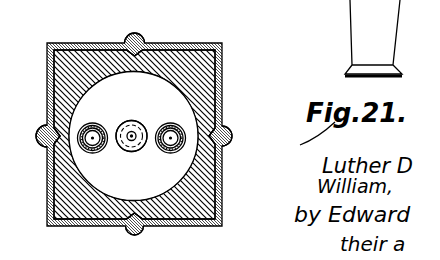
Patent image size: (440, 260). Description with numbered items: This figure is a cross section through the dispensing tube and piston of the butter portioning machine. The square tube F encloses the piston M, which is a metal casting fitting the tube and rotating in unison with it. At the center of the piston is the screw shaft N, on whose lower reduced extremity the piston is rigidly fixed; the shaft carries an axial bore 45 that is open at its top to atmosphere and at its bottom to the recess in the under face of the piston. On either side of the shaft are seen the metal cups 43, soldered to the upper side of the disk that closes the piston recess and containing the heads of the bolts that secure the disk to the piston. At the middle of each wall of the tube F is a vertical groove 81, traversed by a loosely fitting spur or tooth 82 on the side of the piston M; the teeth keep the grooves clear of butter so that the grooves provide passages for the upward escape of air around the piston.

The vertical grooves 81 is at (131, 36).
The spurs or teeth 82 is at (144, 41).
The metal cups 43 is at (103, 152).
The axial bore 45 is at (133, 135).
The screw shaft N is at (130, 122).
The piston M is at (191, 192).
The tube F is at (223, 206).